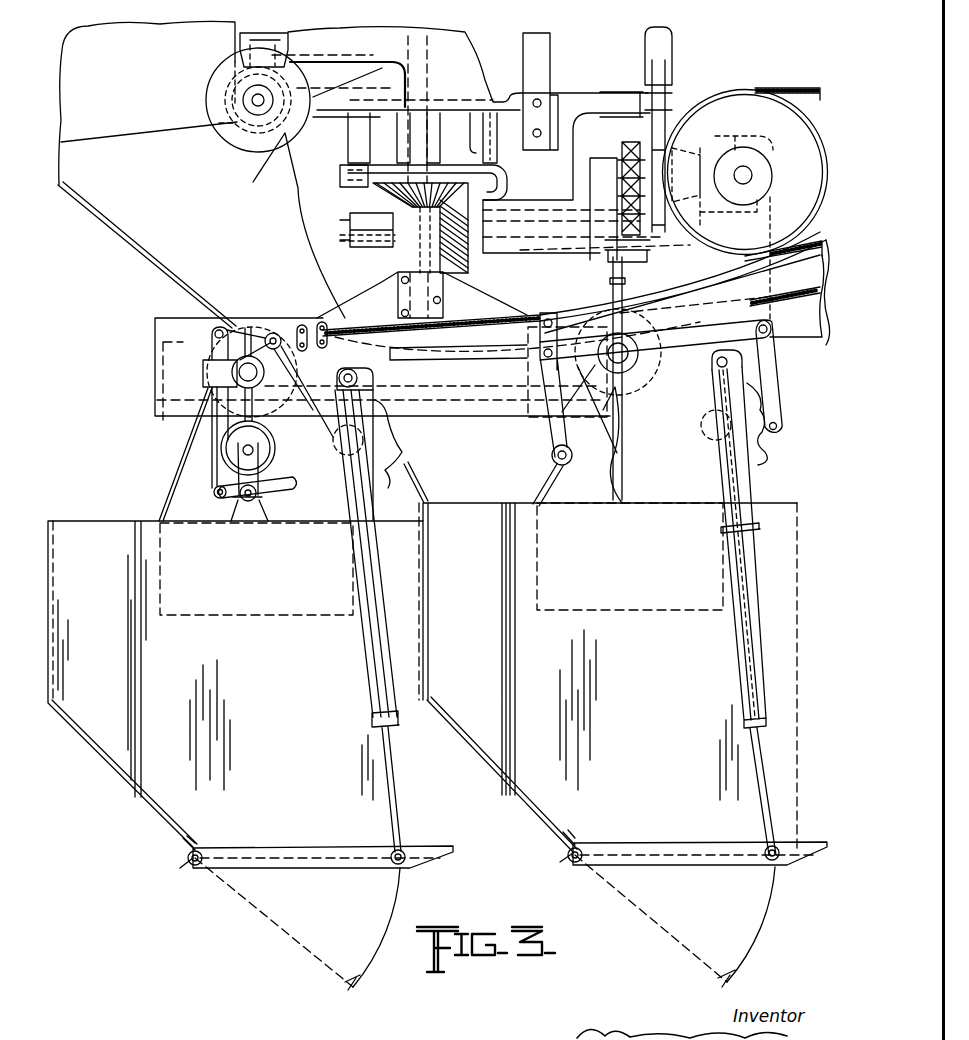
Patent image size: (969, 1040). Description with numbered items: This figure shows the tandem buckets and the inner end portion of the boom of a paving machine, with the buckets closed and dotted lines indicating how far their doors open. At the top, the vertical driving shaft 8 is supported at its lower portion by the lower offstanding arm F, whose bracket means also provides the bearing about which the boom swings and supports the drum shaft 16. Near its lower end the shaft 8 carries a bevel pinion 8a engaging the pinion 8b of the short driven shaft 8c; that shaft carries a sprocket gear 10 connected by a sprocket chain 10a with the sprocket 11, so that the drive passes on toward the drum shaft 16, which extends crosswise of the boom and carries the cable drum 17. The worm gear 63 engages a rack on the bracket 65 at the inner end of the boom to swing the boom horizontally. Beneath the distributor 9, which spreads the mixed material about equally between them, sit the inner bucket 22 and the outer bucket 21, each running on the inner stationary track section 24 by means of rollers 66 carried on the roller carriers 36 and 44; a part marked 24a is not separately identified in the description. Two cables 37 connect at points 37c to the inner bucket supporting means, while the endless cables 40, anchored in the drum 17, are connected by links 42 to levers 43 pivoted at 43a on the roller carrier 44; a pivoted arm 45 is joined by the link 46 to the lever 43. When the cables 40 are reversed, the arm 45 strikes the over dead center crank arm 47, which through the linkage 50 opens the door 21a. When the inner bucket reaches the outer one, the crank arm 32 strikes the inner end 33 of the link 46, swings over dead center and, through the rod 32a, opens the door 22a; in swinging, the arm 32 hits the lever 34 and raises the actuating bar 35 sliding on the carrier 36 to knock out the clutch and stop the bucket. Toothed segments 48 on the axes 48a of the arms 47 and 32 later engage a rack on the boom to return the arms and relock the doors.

The lower offstanding arm F is at (447, 52).
The vertical driving shaft 8 is at (420, 47).
The bevel pinion 8a is at (373, 192).
The pinion 8b is at (468, 267).
The short driven shaft 8c is at (531, 223).
The distributor 9 is at (372, 298).
The sprocket gear 10 is at (628, 262).
The sprocket chain 10a is at (622, 152).
The sprocket 11 is at (632, 140).
The drum shaft 16 is at (742, 168).
The cable drum 17 is at (775, 120).
The outer bucket 21 is at (548, 775).
The door of outer bucket 21a is at (707, 850).
The inner bucket 22 is at (160, 780).
The door of inner bucket 22a is at (325, 860).
The inner stationary track section 24 is at (695, 285).
The bracket 24a is at (455, 133).
The over dead center crank arm 32 is at (375, 393).
The rod 32a is at (368, 650).
The inner end of link 33 is at (467, 357).
The lever 34 is at (290, 488).
The actuating bar 35 is at (212, 336).
The roller carrier 36 is at (177, 483).
The cables 37 is at (332, 320).
The points of connection 37c is at (274, 333).
The endless cables 40 is at (818, 92).
The links 42 is at (790, 277).
The levers 43 is at (560, 433).
The pivot 43a is at (571, 460).
The roller carrier 44 is at (547, 478).
The pivoted arm 45 is at (776, 401).
The link 46 is at (694, 338).
The over dead center crank arm 47 is at (753, 371).
The toothed segments 48 is at (385, 476).
The axes 48a is at (340, 460).
The linkage 50 is at (735, 625).
The worm gear 63 is at (250, 125).
The bracket 65 is at (333, 117).
The rollers 66 is at (247, 328).